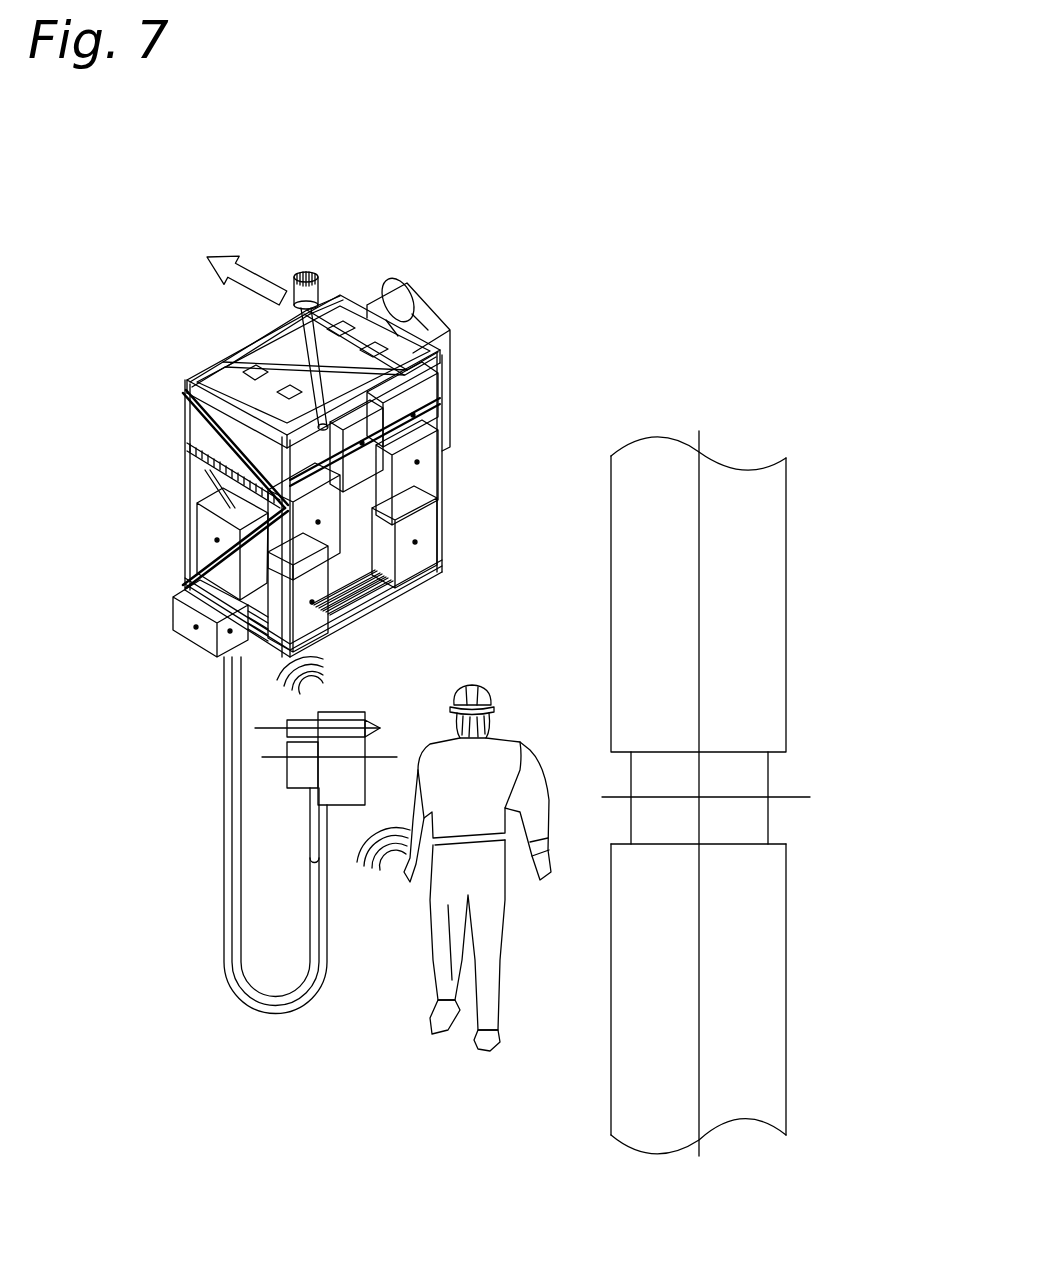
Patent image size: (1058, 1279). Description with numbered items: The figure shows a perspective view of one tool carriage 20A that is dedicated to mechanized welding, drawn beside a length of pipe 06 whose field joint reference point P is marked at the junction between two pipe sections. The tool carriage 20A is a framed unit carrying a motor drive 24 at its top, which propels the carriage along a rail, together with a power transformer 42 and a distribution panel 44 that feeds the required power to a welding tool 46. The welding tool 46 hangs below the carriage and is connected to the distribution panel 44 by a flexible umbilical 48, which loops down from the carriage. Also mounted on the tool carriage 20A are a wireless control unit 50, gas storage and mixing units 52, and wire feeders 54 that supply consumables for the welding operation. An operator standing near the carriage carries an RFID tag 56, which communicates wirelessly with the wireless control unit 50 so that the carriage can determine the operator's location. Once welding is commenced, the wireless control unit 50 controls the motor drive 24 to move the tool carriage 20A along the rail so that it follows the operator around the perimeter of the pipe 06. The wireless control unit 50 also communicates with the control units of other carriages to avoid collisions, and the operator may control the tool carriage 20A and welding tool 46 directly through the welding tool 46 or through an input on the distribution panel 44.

The tool carriage 20A is at (178, 383).
The motor drive 24 is at (278, 353).
The power transformer 42 is at (452, 415).
The wireless control unit 50 is at (365, 432).
The wire feeders 54 is at (303, 609).
The gas storage and mixing units 52 is at (207, 543).
The distribution panel 44 is at (265, 657).
The welding tool 46 is at (288, 790).
The umbilical 48 is at (224, 920).
The RFID tag 56 is at (408, 873).
The pipe 06 is at (730, 504).
The field joint reference point P is at (700, 797).